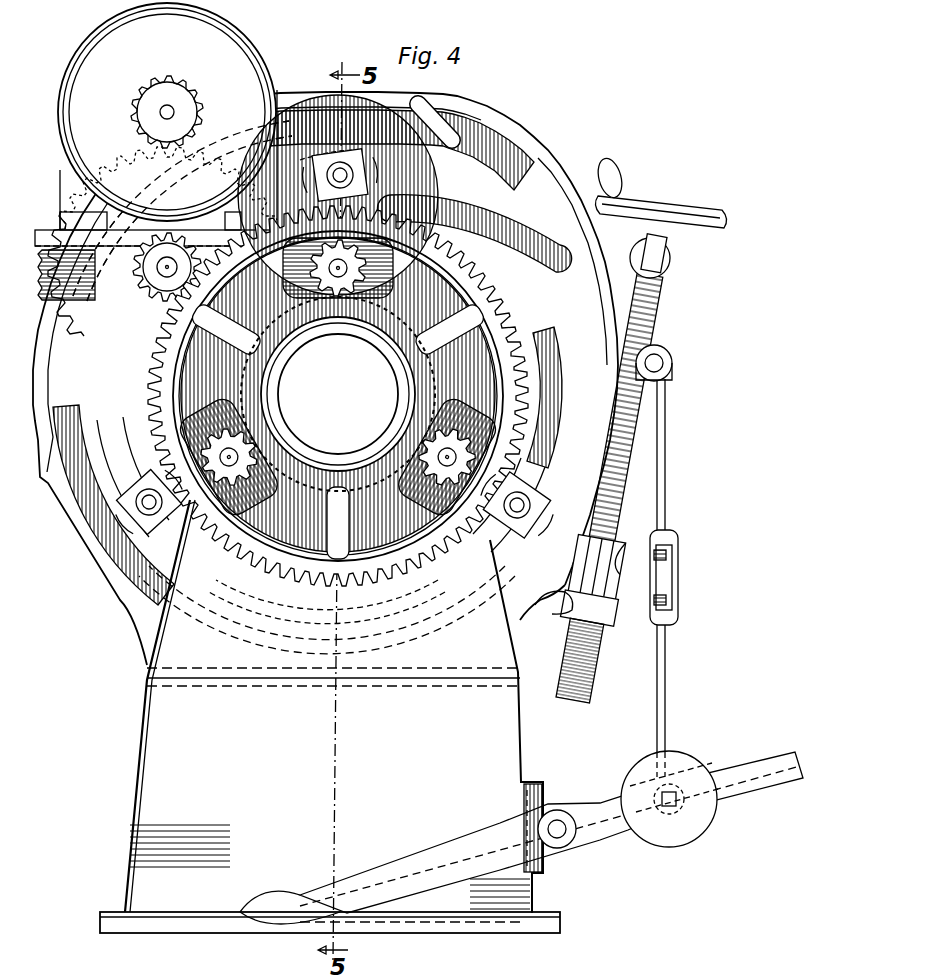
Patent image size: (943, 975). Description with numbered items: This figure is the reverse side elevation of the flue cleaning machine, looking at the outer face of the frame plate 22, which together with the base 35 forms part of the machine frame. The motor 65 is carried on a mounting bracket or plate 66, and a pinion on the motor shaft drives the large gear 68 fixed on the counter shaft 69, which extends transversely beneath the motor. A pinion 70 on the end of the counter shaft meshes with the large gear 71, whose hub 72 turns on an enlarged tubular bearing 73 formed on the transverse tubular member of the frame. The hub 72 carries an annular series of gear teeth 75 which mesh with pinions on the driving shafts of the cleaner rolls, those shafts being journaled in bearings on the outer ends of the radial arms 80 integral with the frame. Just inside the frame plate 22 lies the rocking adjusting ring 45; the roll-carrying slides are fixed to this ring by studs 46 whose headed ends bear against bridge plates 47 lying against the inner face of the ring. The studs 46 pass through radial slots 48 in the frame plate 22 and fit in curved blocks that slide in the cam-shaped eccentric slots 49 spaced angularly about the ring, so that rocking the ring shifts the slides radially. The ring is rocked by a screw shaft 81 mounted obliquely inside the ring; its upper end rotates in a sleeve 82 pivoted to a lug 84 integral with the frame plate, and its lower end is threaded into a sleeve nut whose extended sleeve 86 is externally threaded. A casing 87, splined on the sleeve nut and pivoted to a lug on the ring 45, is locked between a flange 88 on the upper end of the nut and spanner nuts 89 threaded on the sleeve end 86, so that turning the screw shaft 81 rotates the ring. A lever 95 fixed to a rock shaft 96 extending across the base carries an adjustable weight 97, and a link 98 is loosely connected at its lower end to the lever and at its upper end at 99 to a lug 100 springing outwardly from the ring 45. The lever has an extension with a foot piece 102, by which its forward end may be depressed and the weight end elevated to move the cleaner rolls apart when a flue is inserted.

The frame plate 22 is at (187, 618).
The base 35 is at (512, 761).
The rocking adjusting ring 45 is at (478, 143).
The studs 46 is at (353, 169).
The bridge plates 47 is at (415, 212).
The radial slots 48 is at (364, 167).
The cam-shaped eccentric slots 49 is at (488, 186).
The motor 65 is at (240, 50).
The mounting bracket or plate 66 is at (47, 230).
The large gear 68 is at (58, 288).
The counter shaft 69 is at (158, 291).
The pinion 70 is at (132, 293).
The large gear 71 is at (497, 295).
The hub 72 is at (418, 367).
The tubular bearing 73 is at (276, 395).
The gear teeth 75 is at (362, 273).
The radial arms 80 is at (356, 315).
The screw shaft 81 is at (653, 319).
The sleeve 82 is at (662, 259).
The lug 84 is at (618, 246).
The extended sleeve 86 is at (600, 671).
The casing 87 is at (668, 589).
The flange 88 is at (623, 561).
The spanner nuts 89 is at (567, 613).
The lever 95 is at (738, 779).
The rock shaft 96 is at (559, 838).
The weight 97 is at (687, 837).
The link 98 is at (667, 724).
The pivotal connection 99 is at (668, 387).
The lug 100 is at (675, 357).
The foot piece 102 is at (272, 889).